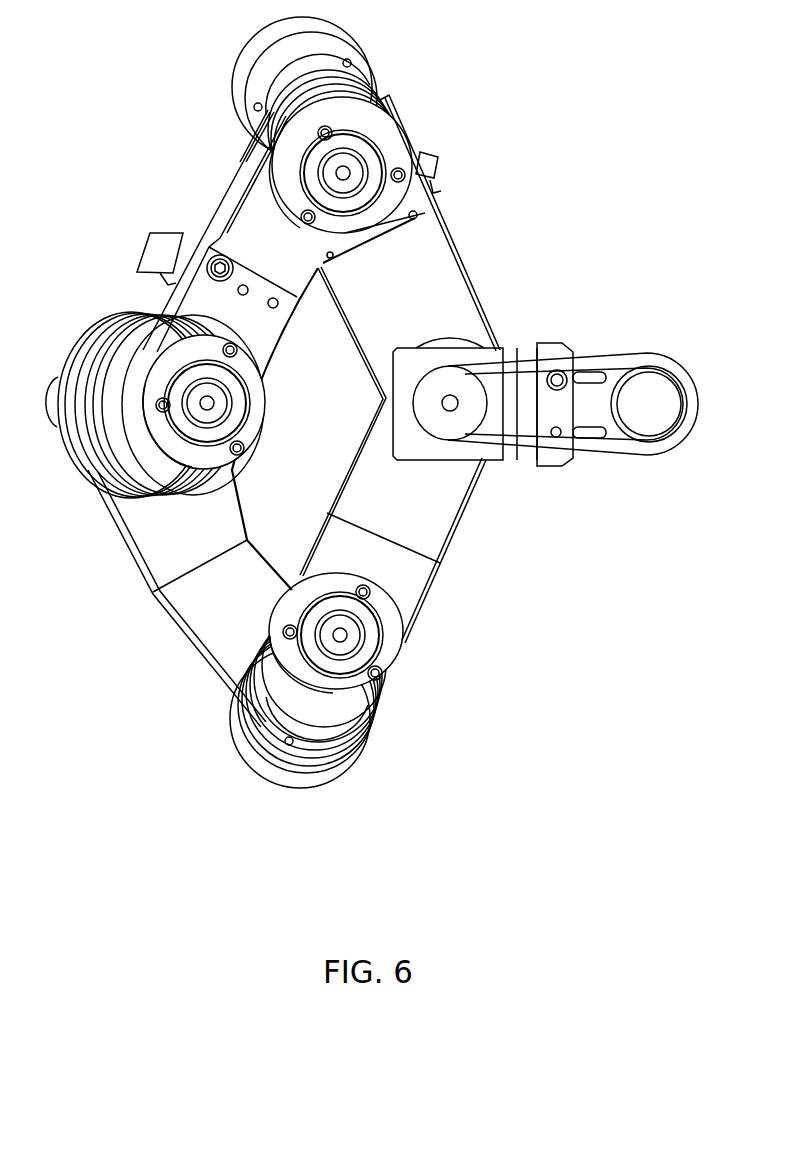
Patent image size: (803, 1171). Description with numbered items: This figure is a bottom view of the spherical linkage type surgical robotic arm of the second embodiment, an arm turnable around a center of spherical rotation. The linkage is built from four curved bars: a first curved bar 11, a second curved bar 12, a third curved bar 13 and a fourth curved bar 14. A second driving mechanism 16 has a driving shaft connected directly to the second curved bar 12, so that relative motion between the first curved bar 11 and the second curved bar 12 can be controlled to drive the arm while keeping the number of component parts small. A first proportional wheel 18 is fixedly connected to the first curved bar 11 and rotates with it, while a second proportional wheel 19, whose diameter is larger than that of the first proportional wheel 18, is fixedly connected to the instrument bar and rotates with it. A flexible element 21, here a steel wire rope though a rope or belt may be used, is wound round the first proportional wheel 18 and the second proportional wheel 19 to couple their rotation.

The first curved bar 11 is at (460, 273).
The second curved bar 12 is at (467, 520).
The third curved bar 13 is at (180, 640).
The fourth curved bar 14 is at (213, 217).
The second driving mechanism 16 is at (660, 346).
The first proportional wheel 18 is at (328, 58).
The second proportional wheel 19 is at (100, 318).
The flexible element 21 is at (242, 152).